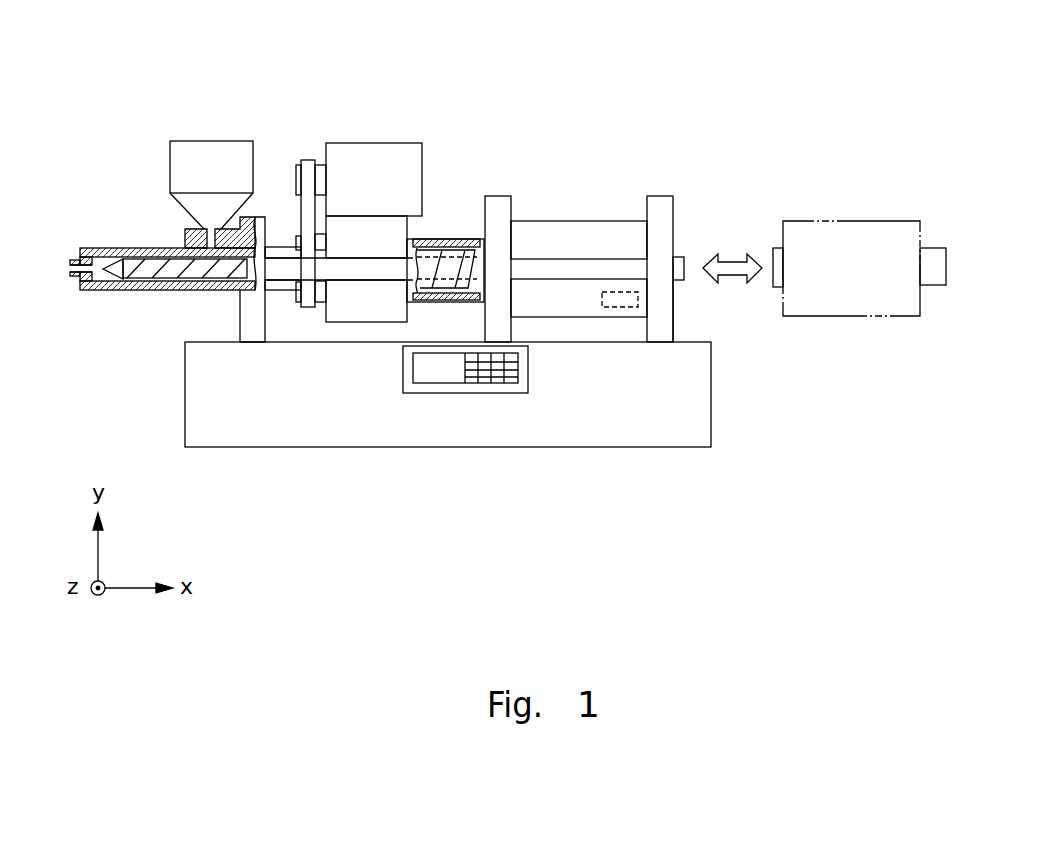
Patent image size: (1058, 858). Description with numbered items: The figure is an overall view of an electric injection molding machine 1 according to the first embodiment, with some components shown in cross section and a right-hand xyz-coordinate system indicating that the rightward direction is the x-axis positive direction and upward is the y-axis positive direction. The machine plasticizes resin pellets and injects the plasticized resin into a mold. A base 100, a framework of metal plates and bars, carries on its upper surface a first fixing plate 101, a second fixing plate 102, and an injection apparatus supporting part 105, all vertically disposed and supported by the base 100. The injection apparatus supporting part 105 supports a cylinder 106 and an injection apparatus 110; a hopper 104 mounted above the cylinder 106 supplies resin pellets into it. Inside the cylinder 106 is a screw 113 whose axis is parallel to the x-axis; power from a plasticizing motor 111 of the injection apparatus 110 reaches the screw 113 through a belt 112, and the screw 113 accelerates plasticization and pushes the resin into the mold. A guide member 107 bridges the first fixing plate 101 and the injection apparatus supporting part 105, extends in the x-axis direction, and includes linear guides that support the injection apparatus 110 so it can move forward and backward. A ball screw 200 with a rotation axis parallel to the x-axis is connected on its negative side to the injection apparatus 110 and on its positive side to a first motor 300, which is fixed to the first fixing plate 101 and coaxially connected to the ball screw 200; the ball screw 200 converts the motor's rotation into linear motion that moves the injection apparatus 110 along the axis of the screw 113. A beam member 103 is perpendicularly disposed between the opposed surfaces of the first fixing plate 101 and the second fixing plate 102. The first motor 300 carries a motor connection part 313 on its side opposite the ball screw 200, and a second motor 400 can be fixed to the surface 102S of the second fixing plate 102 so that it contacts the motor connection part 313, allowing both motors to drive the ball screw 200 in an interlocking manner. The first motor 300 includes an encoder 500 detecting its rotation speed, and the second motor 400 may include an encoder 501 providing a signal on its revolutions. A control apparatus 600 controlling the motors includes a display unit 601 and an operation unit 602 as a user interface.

The electric injection molding machine 1 is at (186, 43).
The base 100 is at (185, 357).
The first fixing plate 101 is at (500, 195).
The second fixing plate 102 is at (660, 195).
The surface 102S is at (689, 308).
The beam member 103 is at (590, 259).
The hopper 104 is at (170, 167).
The injection apparatus supporting part 105 is at (240, 326).
The cylinder 106 is at (95, 248).
The guide member 107 is at (378, 258).
The injection apparatus 110 is at (346, 180).
The plasticizing motor 111 is at (383, 142).
The belt 112 is at (310, 158).
The screw 113 is at (155, 262).
The ball screw 200 is at (447, 238).
The first motor 300 is at (543, 221).
The motor connection part 313 is at (685, 256).
The second motor 400 is at (820, 221).
The encoder 500 is at (620, 307).
The encoder 501 is at (935, 248).
The control apparatus 600 is at (492, 419).
The display unit 601 is at (427, 378).
The operation unit 602 is at (513, 380).